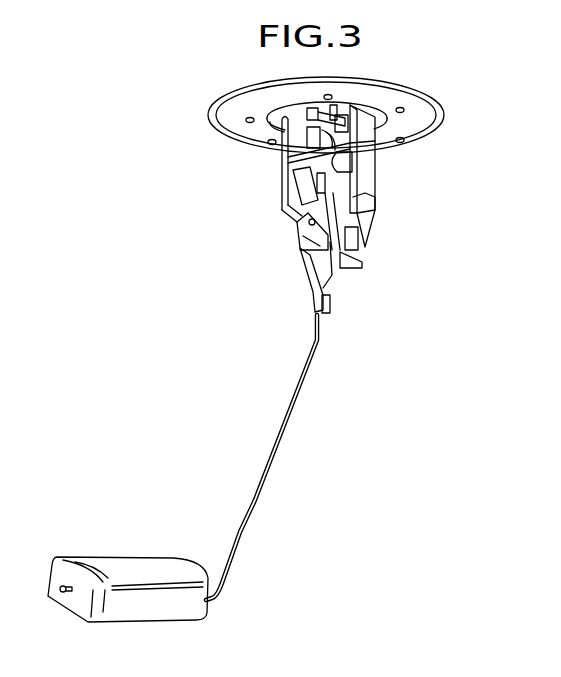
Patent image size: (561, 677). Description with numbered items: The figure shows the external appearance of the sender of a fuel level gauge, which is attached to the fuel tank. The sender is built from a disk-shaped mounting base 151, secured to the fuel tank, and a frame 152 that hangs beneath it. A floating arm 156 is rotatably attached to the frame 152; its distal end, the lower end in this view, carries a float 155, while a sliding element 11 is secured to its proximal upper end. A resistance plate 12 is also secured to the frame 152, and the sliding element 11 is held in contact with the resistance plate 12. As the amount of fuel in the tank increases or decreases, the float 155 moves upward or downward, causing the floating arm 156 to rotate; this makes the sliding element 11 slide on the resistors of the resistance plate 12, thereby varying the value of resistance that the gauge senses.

The mounting base 151 is at (431, 90).
The sliding element 11 is at (302, 175).
The resistance plate 12 is at (333, 150).
The frame 152 is at (370, 190).
The floating arm 156 is at (284, 421).
The float 155 is at (148, 567).